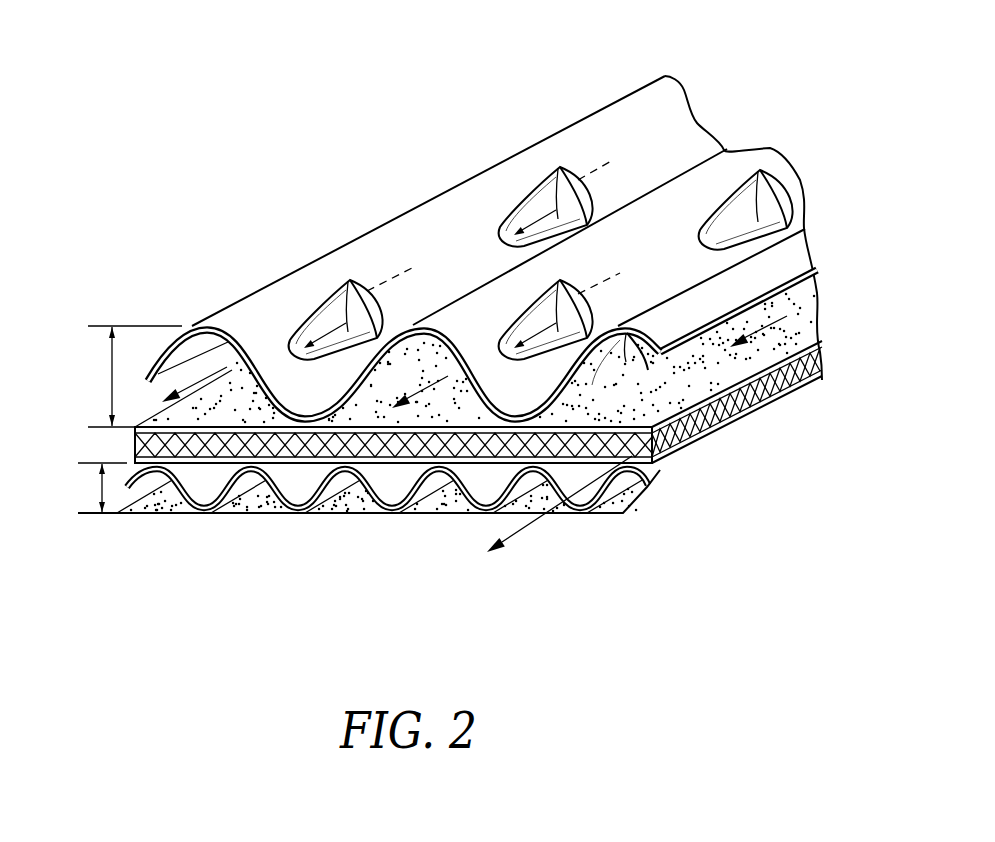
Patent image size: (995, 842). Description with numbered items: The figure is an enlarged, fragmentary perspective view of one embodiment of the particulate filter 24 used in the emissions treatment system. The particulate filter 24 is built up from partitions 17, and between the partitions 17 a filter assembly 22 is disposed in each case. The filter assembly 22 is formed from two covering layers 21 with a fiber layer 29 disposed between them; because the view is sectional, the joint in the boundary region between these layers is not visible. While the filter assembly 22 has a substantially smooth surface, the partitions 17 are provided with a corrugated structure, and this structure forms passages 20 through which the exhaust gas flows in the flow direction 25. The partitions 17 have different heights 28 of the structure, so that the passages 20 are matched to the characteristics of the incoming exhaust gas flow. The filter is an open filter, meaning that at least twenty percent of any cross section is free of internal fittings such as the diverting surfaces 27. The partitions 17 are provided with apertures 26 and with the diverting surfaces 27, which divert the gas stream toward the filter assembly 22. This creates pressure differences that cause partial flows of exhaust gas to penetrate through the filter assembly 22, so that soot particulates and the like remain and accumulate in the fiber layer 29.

The partition 17 is at (250, 313).
The passage 20 is at (203, 490).
The covering layer 21 is at (735, 413).
The filter assembly 22 is at (101, 444).
The particulate filter 24 is at (295, 145).
The flow direction 25 is at (410, 270).
The aperture 26 is at (565, 182).
The diverting surface 27 is at (530, 205).
The height of the structure 28 is at (111, 373).
The fiber layer 29 is at (702, 437).